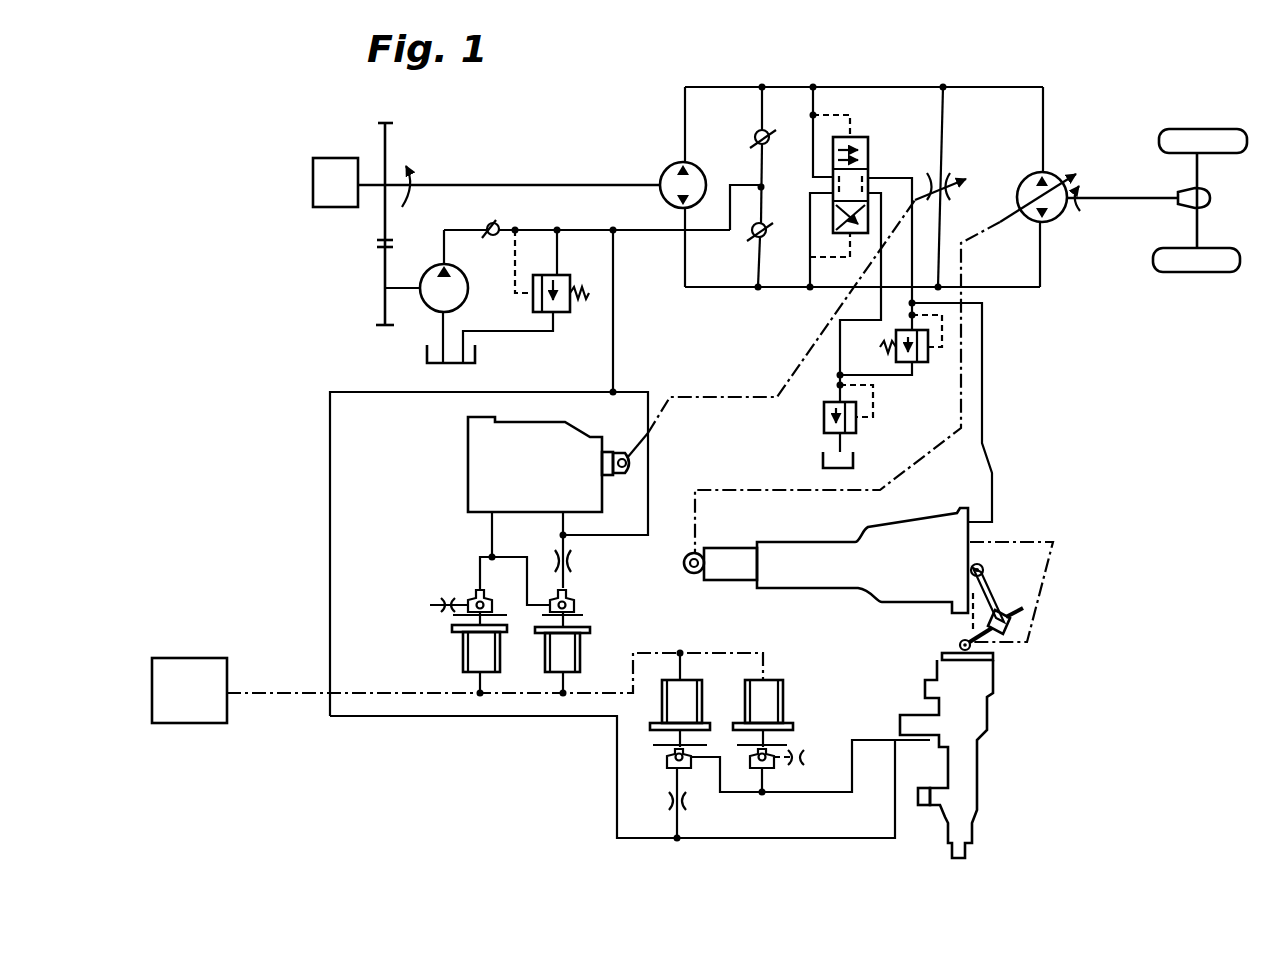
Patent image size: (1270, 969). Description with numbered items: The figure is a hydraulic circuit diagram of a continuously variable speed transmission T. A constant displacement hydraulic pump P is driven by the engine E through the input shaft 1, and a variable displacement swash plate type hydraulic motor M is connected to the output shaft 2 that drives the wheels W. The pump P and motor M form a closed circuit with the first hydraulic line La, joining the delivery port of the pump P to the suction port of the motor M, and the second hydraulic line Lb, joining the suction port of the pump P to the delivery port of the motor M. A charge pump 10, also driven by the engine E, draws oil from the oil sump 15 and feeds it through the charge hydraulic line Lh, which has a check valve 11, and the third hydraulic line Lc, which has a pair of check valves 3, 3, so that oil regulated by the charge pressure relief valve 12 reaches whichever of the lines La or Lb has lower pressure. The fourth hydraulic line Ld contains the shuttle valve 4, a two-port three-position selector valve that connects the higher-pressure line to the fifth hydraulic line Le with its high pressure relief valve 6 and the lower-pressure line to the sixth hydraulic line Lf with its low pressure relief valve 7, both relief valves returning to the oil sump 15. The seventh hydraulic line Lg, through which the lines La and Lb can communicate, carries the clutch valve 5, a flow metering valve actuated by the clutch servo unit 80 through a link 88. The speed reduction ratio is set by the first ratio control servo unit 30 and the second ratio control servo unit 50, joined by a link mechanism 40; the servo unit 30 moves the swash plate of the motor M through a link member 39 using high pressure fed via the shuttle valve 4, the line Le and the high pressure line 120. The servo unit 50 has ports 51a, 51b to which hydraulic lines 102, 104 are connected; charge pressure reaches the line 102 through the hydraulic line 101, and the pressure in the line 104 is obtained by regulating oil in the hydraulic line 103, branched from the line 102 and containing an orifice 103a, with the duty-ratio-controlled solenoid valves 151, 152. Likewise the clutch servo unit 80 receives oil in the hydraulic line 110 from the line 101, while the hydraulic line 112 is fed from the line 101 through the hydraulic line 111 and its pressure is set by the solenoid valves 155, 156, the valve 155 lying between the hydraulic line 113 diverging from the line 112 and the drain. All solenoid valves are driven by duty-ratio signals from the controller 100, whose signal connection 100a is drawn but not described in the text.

The input shaft 1 is at (572, 185).
The output shaft 2 is at (1142, 198).
The check valves 3 is at (756, 132).
The shuttle valve 4 is at (868, 133).
The clutch valve 5 is at (955, 193).
The high pressure relief valve 6 is at (926, 358).
The low pressure relief valve 7 is at (858, 420).
The charge pump 10 is at (466, 296).
The check valve 11 is at (490, 237).
The charge pressure relief valve 12 is at (564, 276).
The oil sump 15 is at (477, 356).
The first ratio control servo unit 30 is at (830, 603).
The link member 39 is at (985, 373).
The link mechanism 40 is at (1008, 592).
The second ratio control servo unit 50 is at (918, 659).
The port 51a is at (918, 705).
The port 51b is at (922, 745).
The clutch servo unit 80 is at (456, 459).
The link 88 is at (760, 395).
The controller 100 is at (205, 658).
The signal lines 100a is at (390, 692).
The hydraulic line 101 is at (616, 348).
The hydraulic line 102 is at (525, 717).
The hydraulic line 103 is at (677, 822).
The orifice 103a is at (688, 803).
The hydraulic line 104 is at (815, 792).
The hydraulic line 110 is at (567, 524).
The hydraulic line 111 is at (568, 578).
The hydraulic line 112 is at (490, 527).
The hydraulic line 113 is at (479, 571).
The high pressure line 120 is at (983, 410).
The first solenoid valve 151 is at (702, 700).
The second solenoid valve 152 is at (785, 697).
The solenoid valve 155 is at (463, 647).
The solenoid valve 156 is at (583, 655).
The engine E is at (313, 181).
The hydraulic pump P is at (668, 168).
The hydraulic motor M is at (1052, 172).
The continuously variable speed transmission T is at (1020, 74).
The wheels W is at (1224, 119).
The first hydraulic line La is at (716, 287).
The second hydraulic line Lb is at (733, 87).
The third hydraulic line Lc is at (764, 186).
The fourth hydraulic line Ld is at (816, 100).
The fifth hydraulic line Le is at (890, 178).
The sixth hydraulic line Lf is at (841, 333).
The seventh hydraulic line Lg is at (944, 127).
The charge hydraulic line Lh is at (655, 232).